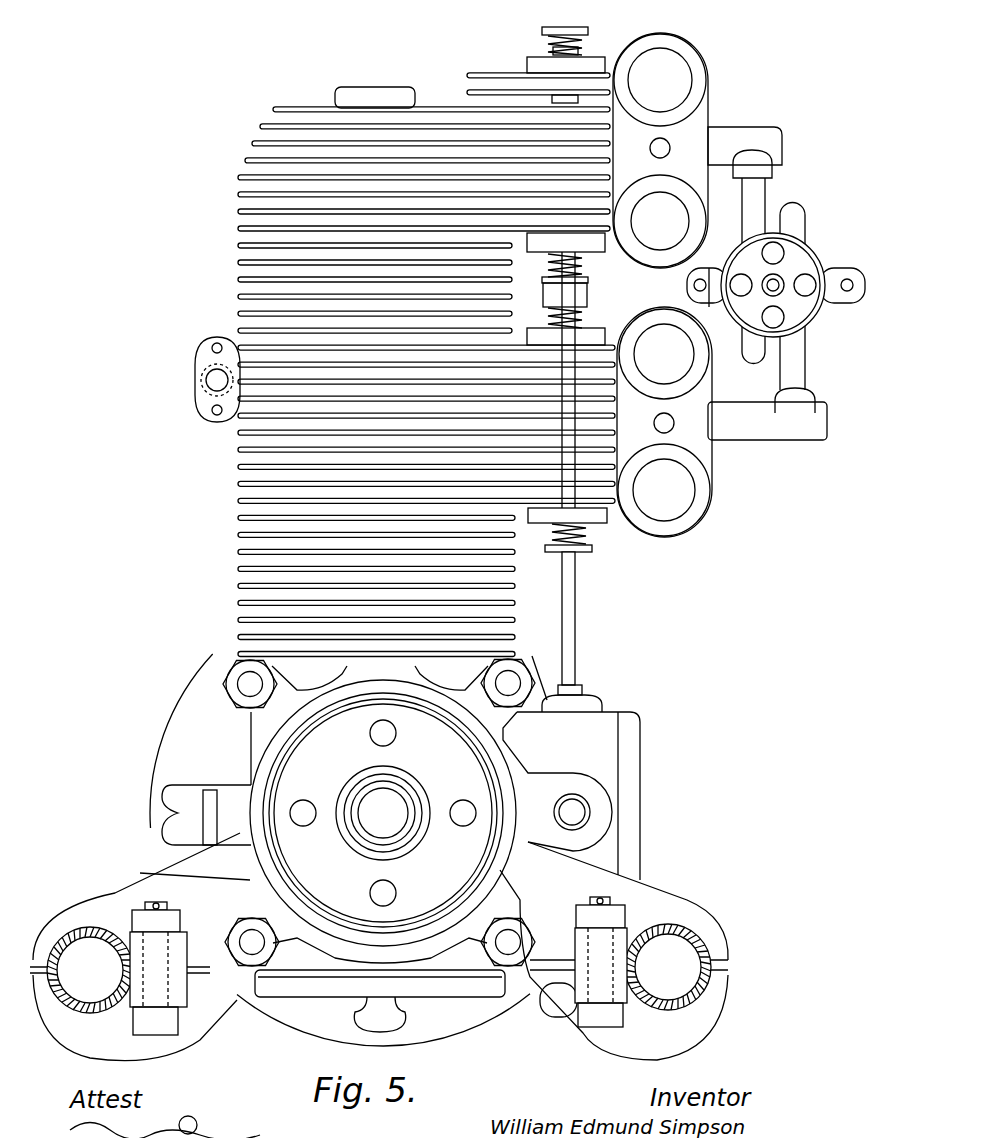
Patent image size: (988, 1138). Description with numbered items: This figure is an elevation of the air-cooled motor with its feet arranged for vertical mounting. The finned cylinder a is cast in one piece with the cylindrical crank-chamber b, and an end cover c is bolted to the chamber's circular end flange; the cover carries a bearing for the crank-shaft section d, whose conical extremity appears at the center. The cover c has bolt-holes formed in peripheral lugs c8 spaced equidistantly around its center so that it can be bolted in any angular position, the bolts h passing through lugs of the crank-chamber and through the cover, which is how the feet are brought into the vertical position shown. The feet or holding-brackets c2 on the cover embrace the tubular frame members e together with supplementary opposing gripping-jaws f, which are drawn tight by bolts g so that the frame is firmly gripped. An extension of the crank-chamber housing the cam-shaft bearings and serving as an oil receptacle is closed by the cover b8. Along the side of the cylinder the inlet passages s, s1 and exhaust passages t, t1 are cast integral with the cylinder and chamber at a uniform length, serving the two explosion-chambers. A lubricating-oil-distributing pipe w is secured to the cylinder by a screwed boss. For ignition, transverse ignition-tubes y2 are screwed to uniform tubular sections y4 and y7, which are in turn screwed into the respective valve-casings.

The cylinder a is at (270, 478).
The lubricating-oil-distributing pipe w is at (205, 380).
The inlet passage s is at (660, 80).
The exhaust passage t is at (660, 221).
The inlet passage s1 is at (664, 354).
The exhaust passage t1 is at (664, 490).
The tubular section y4 is at (730, 140).
The ignition-tube y2 is at (757, 202).
The tubular section y7 is at (793, 430).
The crank-chamber b is at (235, 752).
The end cover c is at (383, 813).
The crank-shaft section d is at (383, 813).
The bolt h is at (512, 683).
The peripheral lug c8 is at (548, 712).
The cover b8 is at (635, 773).
The foot or holding-bracket c2 is at (660, 905).
The bolt g is at (160, 928).
The frame member e is at (95, 1012).
The gripping-jaw f is at (126, 1052).